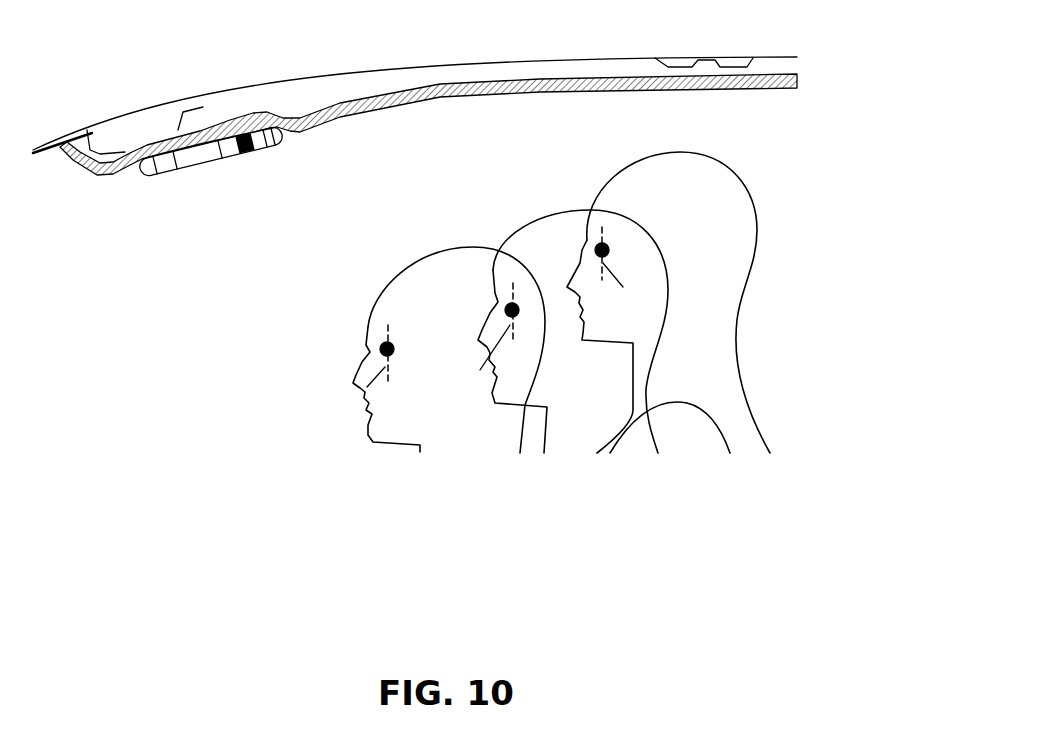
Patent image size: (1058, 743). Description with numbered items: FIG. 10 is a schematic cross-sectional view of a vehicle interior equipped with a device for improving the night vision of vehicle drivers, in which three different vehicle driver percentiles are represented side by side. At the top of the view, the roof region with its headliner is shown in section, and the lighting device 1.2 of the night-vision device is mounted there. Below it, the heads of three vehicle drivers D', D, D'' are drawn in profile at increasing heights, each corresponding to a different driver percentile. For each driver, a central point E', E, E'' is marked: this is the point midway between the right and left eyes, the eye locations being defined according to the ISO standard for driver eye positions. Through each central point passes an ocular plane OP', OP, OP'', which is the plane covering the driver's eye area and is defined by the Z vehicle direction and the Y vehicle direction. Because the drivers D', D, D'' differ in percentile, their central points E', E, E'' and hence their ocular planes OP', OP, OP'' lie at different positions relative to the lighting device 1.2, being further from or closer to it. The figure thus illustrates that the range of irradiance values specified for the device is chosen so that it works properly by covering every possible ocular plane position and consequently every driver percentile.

The lighting device 1.2 is at (242, 150).
The vehicle driver D' is at (449, 402).
The vehicle driver D is at (573, 375).
The vehicle driver D'' is at (693, 344).
The central point E' is at (367, 332).
The central point E is at (491, 298).
The central point E'' is at (579, 217).
The ocular plane OP' is at (344, 393).
The ocular plane OP is at (474, 364).
The ocular plane OP'' is at (638, 293).